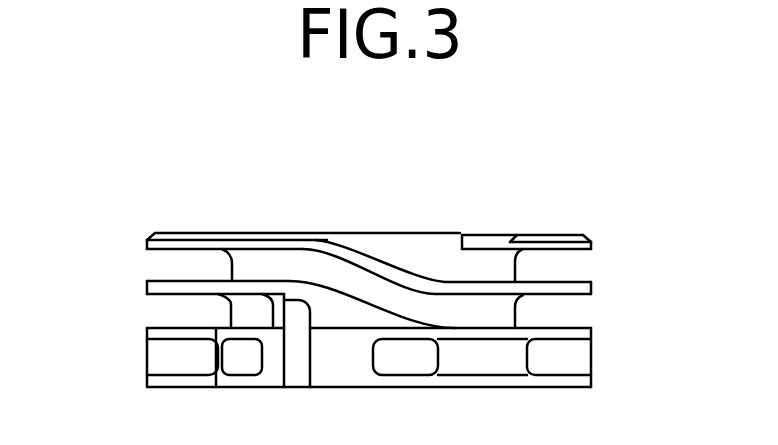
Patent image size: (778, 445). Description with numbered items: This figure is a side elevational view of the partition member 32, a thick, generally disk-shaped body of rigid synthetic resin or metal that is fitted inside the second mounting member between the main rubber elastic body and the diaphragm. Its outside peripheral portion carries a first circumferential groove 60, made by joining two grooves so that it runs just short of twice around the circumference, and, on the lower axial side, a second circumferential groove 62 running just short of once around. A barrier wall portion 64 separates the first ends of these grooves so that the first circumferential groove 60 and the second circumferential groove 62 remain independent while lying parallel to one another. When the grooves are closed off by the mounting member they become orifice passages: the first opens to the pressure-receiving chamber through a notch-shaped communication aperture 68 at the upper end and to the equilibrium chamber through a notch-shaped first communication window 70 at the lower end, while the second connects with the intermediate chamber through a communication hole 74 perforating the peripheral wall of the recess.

The partition member 32 is at (367, 258).
The first circumferential groove 60 is at (223, 262).
The second circumferential groove 62 is at (529, 358).
The barrier wall portion 64 is at (178, 357).
The communication aperture 68 is at (462, 246).
The first communication window 70 is at (282, 343).
The communication hole 74 is at (428, 353).